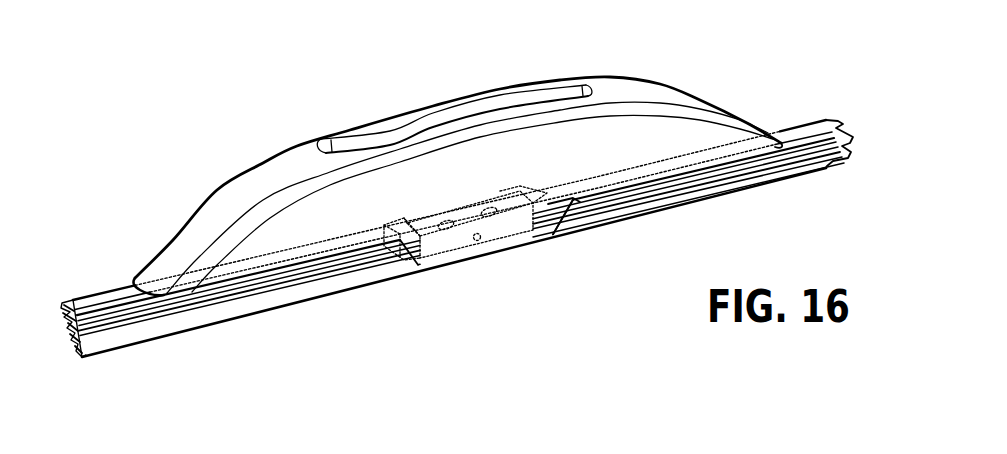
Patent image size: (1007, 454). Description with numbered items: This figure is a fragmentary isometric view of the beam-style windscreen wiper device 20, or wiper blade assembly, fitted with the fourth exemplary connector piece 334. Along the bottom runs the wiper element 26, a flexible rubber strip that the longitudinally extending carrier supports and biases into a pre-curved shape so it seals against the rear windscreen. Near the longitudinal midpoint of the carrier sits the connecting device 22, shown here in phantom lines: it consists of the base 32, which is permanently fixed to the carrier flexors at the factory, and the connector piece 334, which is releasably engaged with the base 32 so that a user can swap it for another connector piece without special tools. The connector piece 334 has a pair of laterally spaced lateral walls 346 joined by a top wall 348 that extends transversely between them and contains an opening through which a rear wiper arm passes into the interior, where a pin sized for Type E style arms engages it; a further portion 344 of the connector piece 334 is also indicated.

The windscreen wiper device 20 is at (705, 60).
The connecting device 22 is at (216, 192).
The wiper element 26 is at (367, 281).
The base 32 is at (458, 243).
The fourth exemplary connector piece 334 is at (305, 156).
The clip 344 is at (547, 222).
The lateral walls 346 is at (279, 243).
The top wall 348 is at (186, 250).